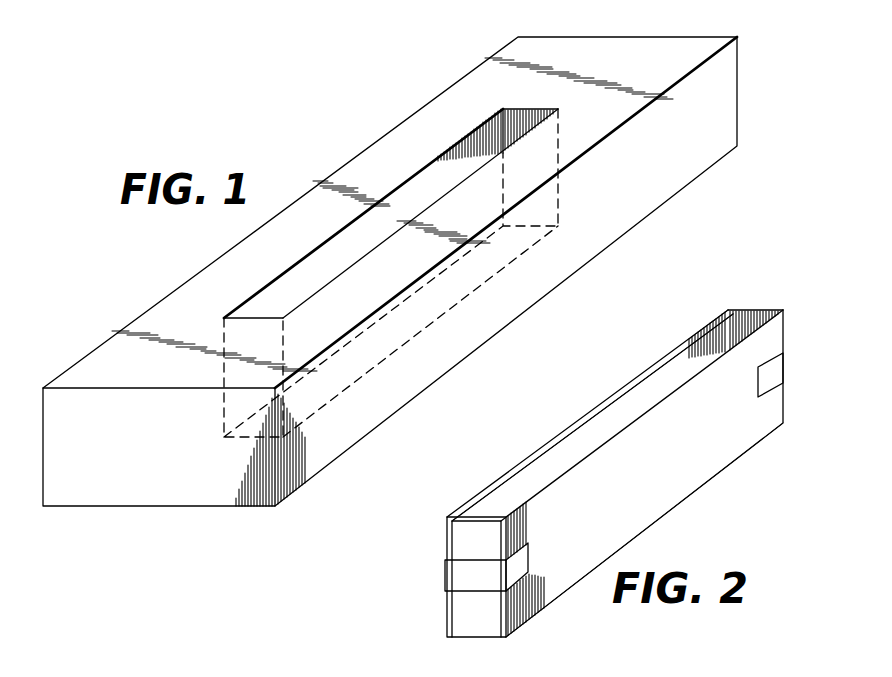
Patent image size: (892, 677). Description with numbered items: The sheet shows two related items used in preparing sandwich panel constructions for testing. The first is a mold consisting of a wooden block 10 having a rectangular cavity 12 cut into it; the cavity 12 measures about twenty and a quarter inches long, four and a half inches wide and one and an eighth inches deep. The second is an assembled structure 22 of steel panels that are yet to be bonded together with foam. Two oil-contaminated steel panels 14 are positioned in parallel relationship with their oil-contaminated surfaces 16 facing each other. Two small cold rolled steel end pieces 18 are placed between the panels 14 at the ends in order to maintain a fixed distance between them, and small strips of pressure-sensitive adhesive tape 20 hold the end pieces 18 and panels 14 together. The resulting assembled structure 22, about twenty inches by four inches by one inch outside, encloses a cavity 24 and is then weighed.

In FIG. 1, the wooden block 10 is at (143, 333).
In FIG. 1, the rectangular cavity 12 is at (432, 177).
In FIG. 2, the panels 14 is at (640, 381).
In FIG. 2, the oil-contaminated surfaces 16 is at (580, 462).
In FIG. 2, the end pieces 18 is at (468, 535).
In FIG. 2, the pressure-sensitive adhesive tape 20 is at (463, 573).
In FIG. 2, the assembled structure 22 is at (656, 521).
In FIG. 2, the cavity 24 is at (688, 358).